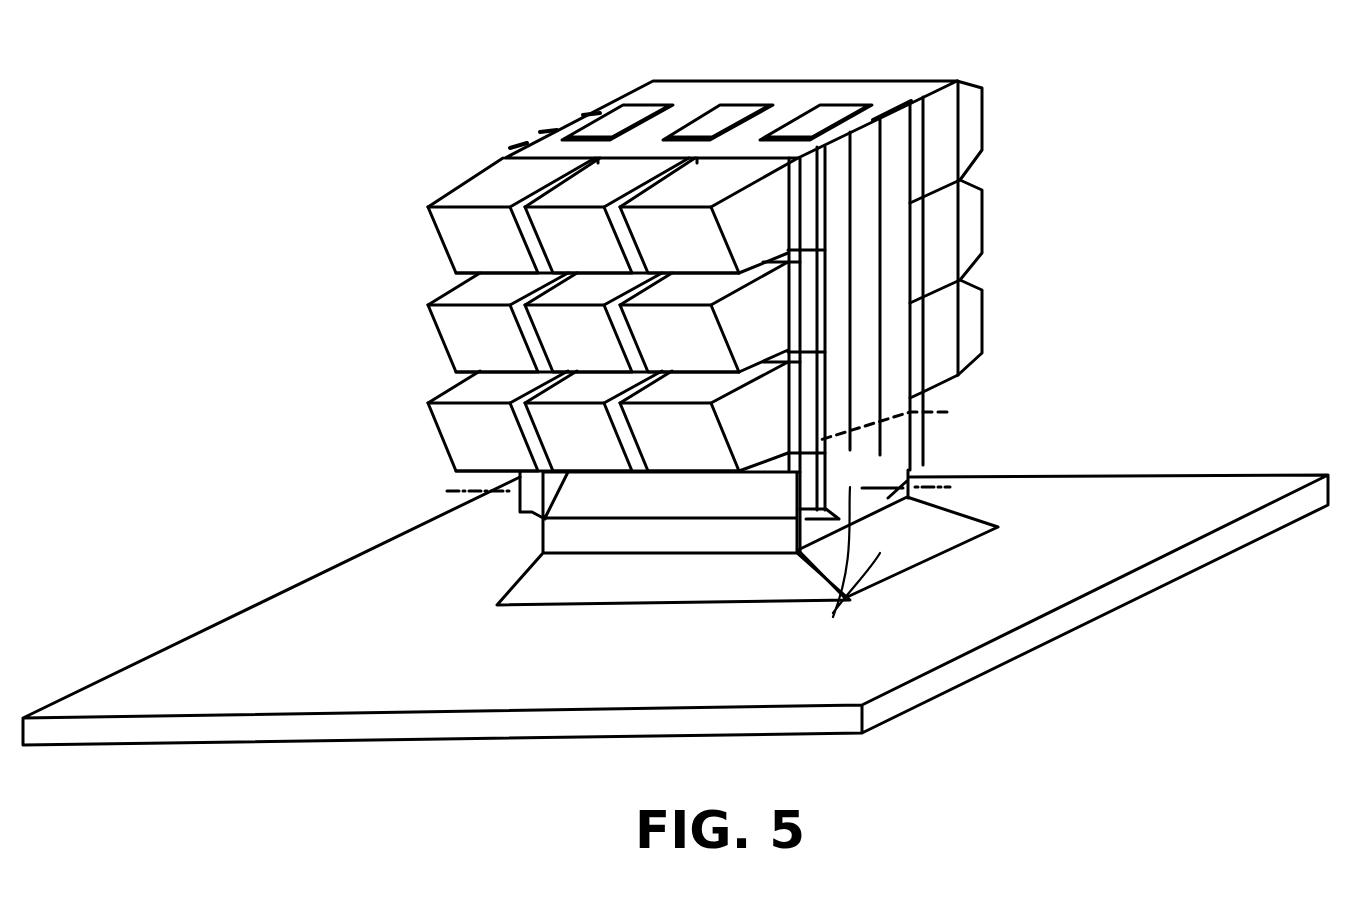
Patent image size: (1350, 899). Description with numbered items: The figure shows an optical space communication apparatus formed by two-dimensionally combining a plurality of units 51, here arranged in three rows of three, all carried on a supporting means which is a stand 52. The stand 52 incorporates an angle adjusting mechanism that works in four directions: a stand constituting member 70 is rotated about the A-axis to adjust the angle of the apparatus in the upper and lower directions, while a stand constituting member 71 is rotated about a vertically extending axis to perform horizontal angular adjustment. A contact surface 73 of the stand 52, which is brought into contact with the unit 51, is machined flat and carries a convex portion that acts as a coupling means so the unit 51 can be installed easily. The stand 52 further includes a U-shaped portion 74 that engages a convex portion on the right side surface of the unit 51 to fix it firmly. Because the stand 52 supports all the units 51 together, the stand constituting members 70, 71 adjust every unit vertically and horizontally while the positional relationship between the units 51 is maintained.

The unit 51 is at (819, 277).
The stand 52 is at (1128, 493).
The stand constituting member 70 is at (890, 453).
The stand constituting member 71 is at (970, 527).
The contact surface 73 is at (957, 398).
The U-shaped portion 74 is at (837, 191).